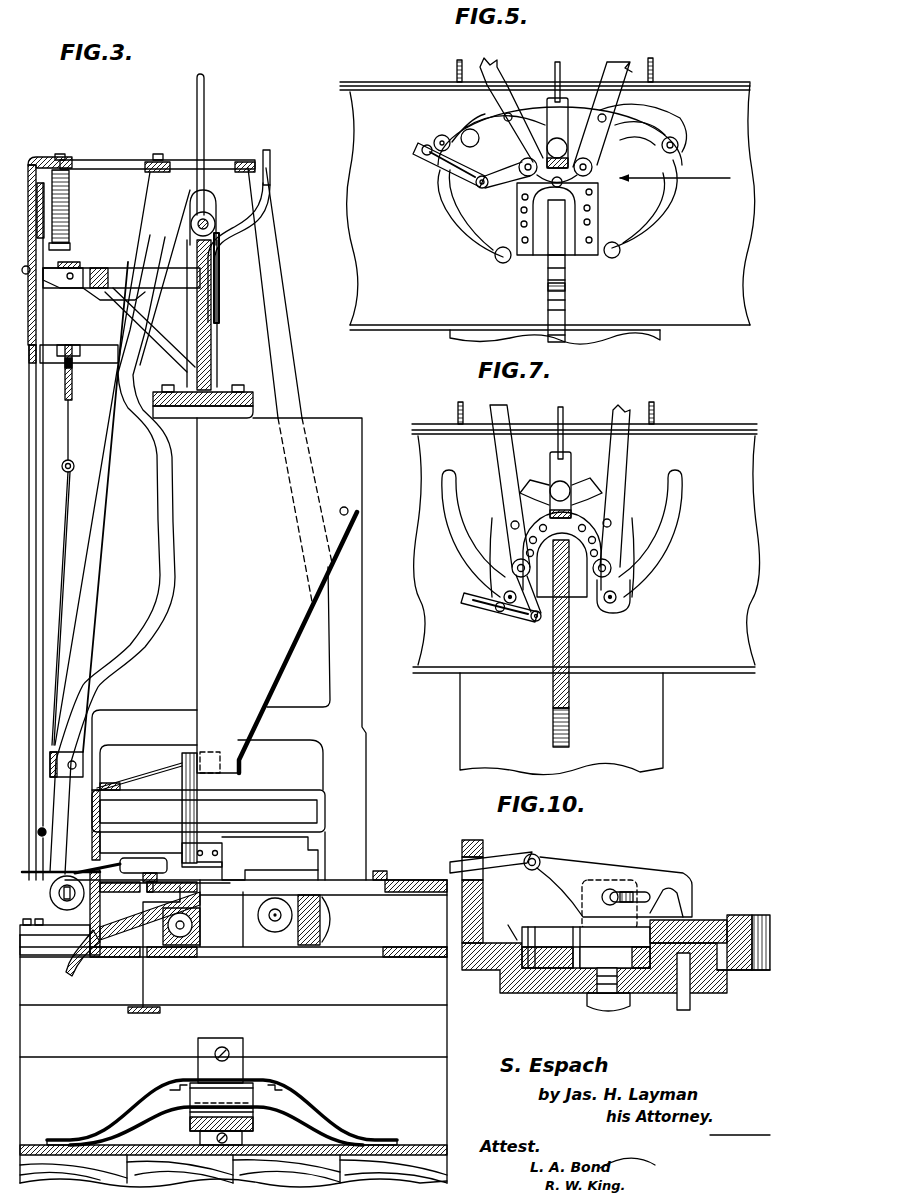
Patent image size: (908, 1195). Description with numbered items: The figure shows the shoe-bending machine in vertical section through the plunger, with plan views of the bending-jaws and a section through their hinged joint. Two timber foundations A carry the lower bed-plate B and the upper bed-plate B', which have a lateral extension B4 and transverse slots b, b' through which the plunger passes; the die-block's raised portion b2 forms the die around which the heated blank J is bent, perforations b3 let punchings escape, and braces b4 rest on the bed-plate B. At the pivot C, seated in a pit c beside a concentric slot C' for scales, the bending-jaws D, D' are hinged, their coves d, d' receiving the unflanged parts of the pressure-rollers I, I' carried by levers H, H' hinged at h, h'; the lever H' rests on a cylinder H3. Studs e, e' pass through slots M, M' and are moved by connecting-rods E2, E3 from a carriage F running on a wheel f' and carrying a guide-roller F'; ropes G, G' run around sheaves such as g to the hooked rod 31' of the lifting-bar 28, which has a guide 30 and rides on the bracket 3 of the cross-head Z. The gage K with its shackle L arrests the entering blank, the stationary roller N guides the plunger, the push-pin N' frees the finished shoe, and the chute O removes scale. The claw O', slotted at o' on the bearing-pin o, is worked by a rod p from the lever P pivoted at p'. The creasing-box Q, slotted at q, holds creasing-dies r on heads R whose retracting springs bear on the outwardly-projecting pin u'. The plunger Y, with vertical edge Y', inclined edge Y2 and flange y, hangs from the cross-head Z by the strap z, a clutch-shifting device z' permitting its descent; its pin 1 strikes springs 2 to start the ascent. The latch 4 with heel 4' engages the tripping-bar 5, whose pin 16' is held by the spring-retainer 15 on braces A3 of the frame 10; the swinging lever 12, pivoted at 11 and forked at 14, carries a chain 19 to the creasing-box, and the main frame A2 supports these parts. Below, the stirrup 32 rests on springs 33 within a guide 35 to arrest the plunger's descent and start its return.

In FIG. 3, the pin 1 is at (343, 502).
In FIG. 3, the system of springs 2 is at (380, 862).
In FIG. 3, the rigid bracket 3 is at (121, 320).
In FIG. 3, the lifting-latch 4 is at (63, 285).
In FIG. 3, the heel 4' is at (114, 310).
In FIG. 3, the curved tripping-bar 5 is at (28, 238).
In FIG. 3, the frame 10 is at (29, 362).
In FIG. 3, the pivot 11 is at (28, 272).
In FIG. 3, the swinging lever 12 is at (29, 675).
In FIG. 3, the fork 14 is at (41, 180).
In FIG. 3, the bent spring-retainer 15 is at (72, 206).
In FIG. 3, the pin 16' is at (78, 235).
In FIG. 3, the wire rope or chain 19 is at (36, 838).
In FIG. 3, the lifting-bar 28 is at (82, 265).
In FIG. 3, the guide 30 is at (77, 402).
In FIG. 3, the hooked rod 31' is at (76, 590).
In FIG. 3, the stirrup 32 is at (206, 1114).
In FIG. 3, the springs 33 is at (222, 1112).
In FIG. 3, the guide 35 is at (226, 1056).
In FIG. 3, the timber foundation A is at (440, 1038).
In FIG. 3, the main frame A2 is at (110, 548).
In FIG. 3, the braces A3 is at (148, 158).
In FIG. 3, the lower bed-plate B is at (233, 1031).
In FIG. 5, the lower bed-plate B is at (583, 257).
In FIG. 3, the upper bed-plate B' is at (256, 874).
In FIG. 5, the upper bed-plate B' is at (547, 206).
In FIG. 7, the upper bed-plate B' is at (576, 548).
In FIG. 10, the upper bed-plate B' is at (616, 916).
In FIG. 3, the lateral extension B4 is at (410, 918).
In FIG. 5, the lateral extension B4 is at (539, 342).
In FIG. 7, the lateral extension B4 is at (561, 724).
In FIG. 3, the slot b is at (354, 959).
In FIG. 3, the slot b' is at (362, 873).
In FIG. 5, the slot b' is at (576, 301).
In FIG. 7, the slot b' is at (562, 629).
In FIG. 3, the die b2 is at (257, 874).
In FIG. 5, the die b2 is at (556, 271).
In FIG. 10, the die b2 is at (748, 932).
In FIG. 5, the perforations b3 is at (601, 203).
In FIG. 3, the braces b4 is at (226, 914).
In FIG. 5, the pivot C is at (569, 133).
In FIG. 7, the pivot C is at (553, 485).
In FIG. 10, the pivot C is at (607, 996).
In FIG. 3, the slot C' is at (120, 912).
In FIG. 10, the slot C' is at (667, 982).
In FIG. 3, the pit c is at (162, 879).
In FIG. 10, the pit c is at (506, 929).
In FIG. 5, the bending-jaw D is at (560, 136).
In FIG. 7, the bending-jaw D is at (519, 538).
In FIG. 10, the bending-jaw D is at (586, 957).
In FIG. 5, the bending-jaw D' is at (643, 122).
In FIG. 7, the bending-jaw D' is at (603, 537).
In FIG. 10, the bending-jaw D' is at (586, 939).
In FIG. 5, the cove d is at (470, 142).
In FIG. 5, the cove d' is at (637, 147).
In FIG. 5, the connecting-rod E2 is at (498, 250).
In FIG. 3, the connecting-rod E3 is at (248, 900).
In FIG. 5, the connecting-rod E3 is at (620, 250).
In FIG. 5, the stud e is at (442, 134).
In FIG. 7, the stud e is at (504, 592).
In FIG. 5, the stud e' is at (688, 145).
In FIG. 7, the stud e' is at (623, 596).
In FIG. 3, the carriage F is at (309, 947).
In FIG. 5, the carriage F is at (552, 348).
In FIG. 3, the guide-roller F' is at (275, 942).
In FIG. 5, the guide-roller F' is at (596, 289).
In FIG. 7, the guide-roller F' is at (530, 724).
In FIG. 3, the wheel f' is at (331, 919).
In FIG. 5, the chain or wire-rope G is at (449, 71).
In FIG. 7, the chain or wire-rope G is at (451, 413).
In FIG. 3, the chain or wire-rope G' is at (57, 584).
In FIG. 5, the chain or wire-rope G' is at (660, 70).
In FIG. 7, the chain or wire-rope G' is at (662, 413).
In FIG. 3, the sheave g is at (57, 893).
In FIG. 5, the lever H is at (511, 110).
In FIG. 7, the lever H is at (504, 486).
In FIG. 3, the lever H' is at (50, 878).
In FIG. 5, the lever H' is at (602, 111).
In FIG. 7, the lever H' is at (620, 486).
In FIG. 3, the cylinder H3 is at (50, 935).
In FIG. 5, the hinge pivot h is at (502, 110).
In FIG. 7, the hinge pivot h is at (498, 514).
In FIG. 5, the hinge pivot h' is at (613, 119).
In FIG. 7, the hinge pivot h' is at (625, 510).
In FIG. 5, the pressure-roller I is at (523, 165).
In FIG. 7, the pressure-roller I is at (514, 567).
In FIG. 5, the pressure-roller I' is at (572, 169).
In FIG. 7, the pressure-roller I' is at (608, 563).
In FIG. 10, the blank J is at (688, 923).
In FIG. 5, the stop or gage K is at (503, 182).
In FIG. 7, the stop or gage K is at (528, 608).
In FIG. 5, the shackle L is at (410, 148).
In FIG. 7, the shackle L is at (491, 603).
In FIG. 5, the slot M is at (461, 213).
In FIG. 7, the slot M is at (464, 533).
In FIG. 5, the slot M' is at (644, 204).
In FIG. 7, the slot M' is at (664, 533).
In FIG. 3, the stationary roller N is at (181, 927).
In FIG. 3, the push-pin N' is at (154, 950).
In FIG. 10, the push-pin N' is at (705, 1007).
In FIG. 3, the chute O is at (127, 944).
In FIG. 3, the clamp or claw O' is at (121, 861).
In FIG. 10, the clamp or claw O' is at (608, 879).
In FIG. 10, the bearing-pin o is at (609, 905).
In FIG. 5, the slot o' is at (557, 148).
In FIG. 7, the slot o' is at (560, 492).
In FIG. 10, the slot o' is at (630, 889).
In FIG. 3, the lever P is at (120, 532).
In FIG. 5, the rod p is at (569, 75).
In FIG. 7, the rod p is at (569, 425).
In FIG. 10, the rod p is at (491, 854).
In FIG. 3, the pivot p' is at (66, 756).
In FIG. 3, the creasing-box Q is at (208, 835).
In FIG. 3, the transverse slot q is at (266, 784).
In FIG. 3, the head R is at (208, 811).
In FIG. 3, the creasing-die r is at (225, 864).
In FIG. 3, the outwardly-projecting pin u' is at (139, 776).
In FIG. 3, the plunger Y is at (283, 649).
In FIG. 7, the plunger Y is at (591, 695).
In FIG. 3, the vertical rear edge Y' is at (166, 604).
In FIG. 3, the inclined front edge Y2 is at (298, 670).
In FIG. 3, the flange y is at (203, 412).
In FIG. 3, the cross-head Z is at (209, 290).
In FIG. 3, the strap or belt z is at (190, 144).
In FIG. 3, the clutch-shifting device z' is at (249, 236).